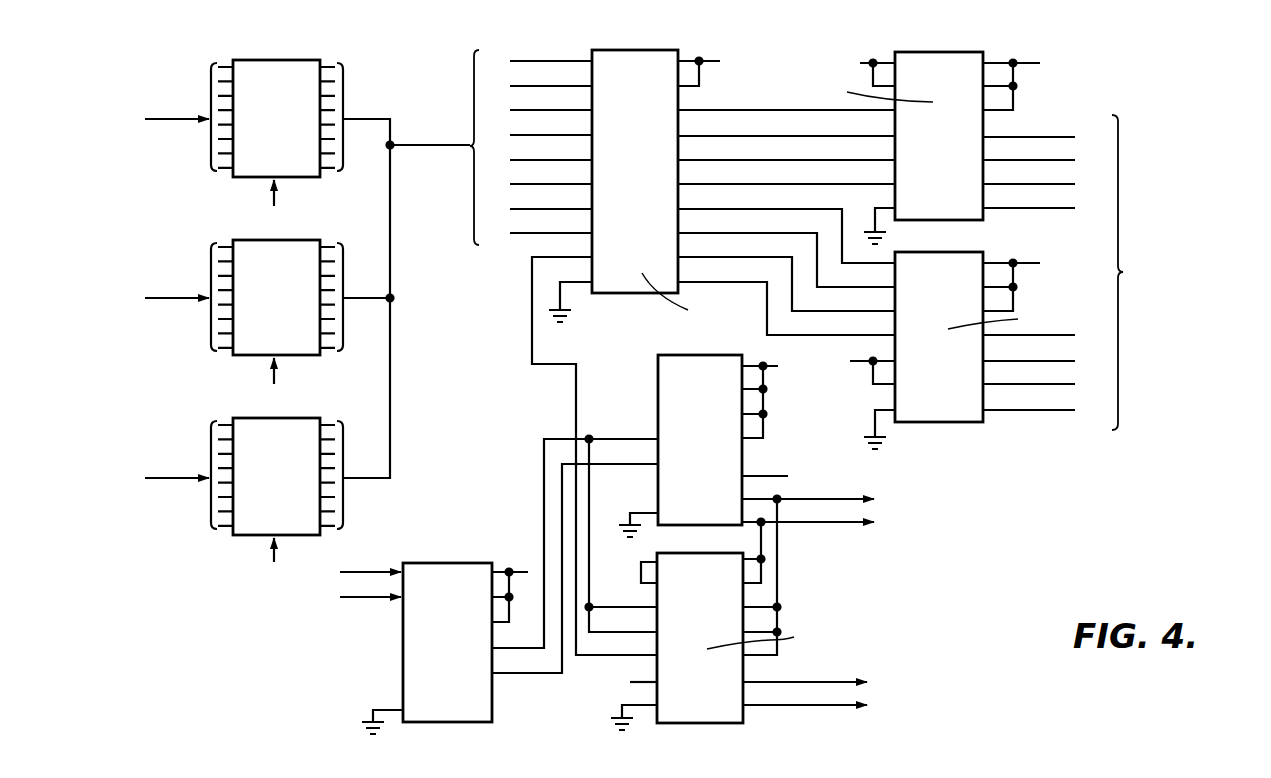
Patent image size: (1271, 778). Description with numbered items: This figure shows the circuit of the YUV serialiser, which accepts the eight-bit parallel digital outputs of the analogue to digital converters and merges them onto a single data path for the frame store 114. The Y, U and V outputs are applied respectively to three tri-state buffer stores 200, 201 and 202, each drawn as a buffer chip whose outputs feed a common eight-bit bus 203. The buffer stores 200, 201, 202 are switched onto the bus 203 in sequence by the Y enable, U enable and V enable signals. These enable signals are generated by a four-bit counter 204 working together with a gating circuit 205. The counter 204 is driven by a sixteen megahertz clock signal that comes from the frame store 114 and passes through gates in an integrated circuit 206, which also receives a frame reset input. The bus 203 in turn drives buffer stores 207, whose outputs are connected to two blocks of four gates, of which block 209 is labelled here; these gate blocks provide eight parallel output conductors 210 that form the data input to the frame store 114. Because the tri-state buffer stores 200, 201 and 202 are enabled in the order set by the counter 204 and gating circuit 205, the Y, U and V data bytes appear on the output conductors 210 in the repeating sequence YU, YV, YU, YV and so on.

The tri-state buffer store 200 is at (243, 60).
The tri-state buffer store 201 is at (250, 240).
The tri-state buffer store 202 is at (246, 418).
The common 8-bit bus 203 is at (393, 305).
The 4-bit counter 204 is at (658, 415).
The gating circuit 205 is at (743, 710).
The integrated circuit 206 is at (492, 697).
The buffer stores 207 is at (626, 295).
The block of four gates 209 is at (952, 423).
The parallel output conductors 210 is at (1043, 422).
The frame store 114 is at (1173, 272).